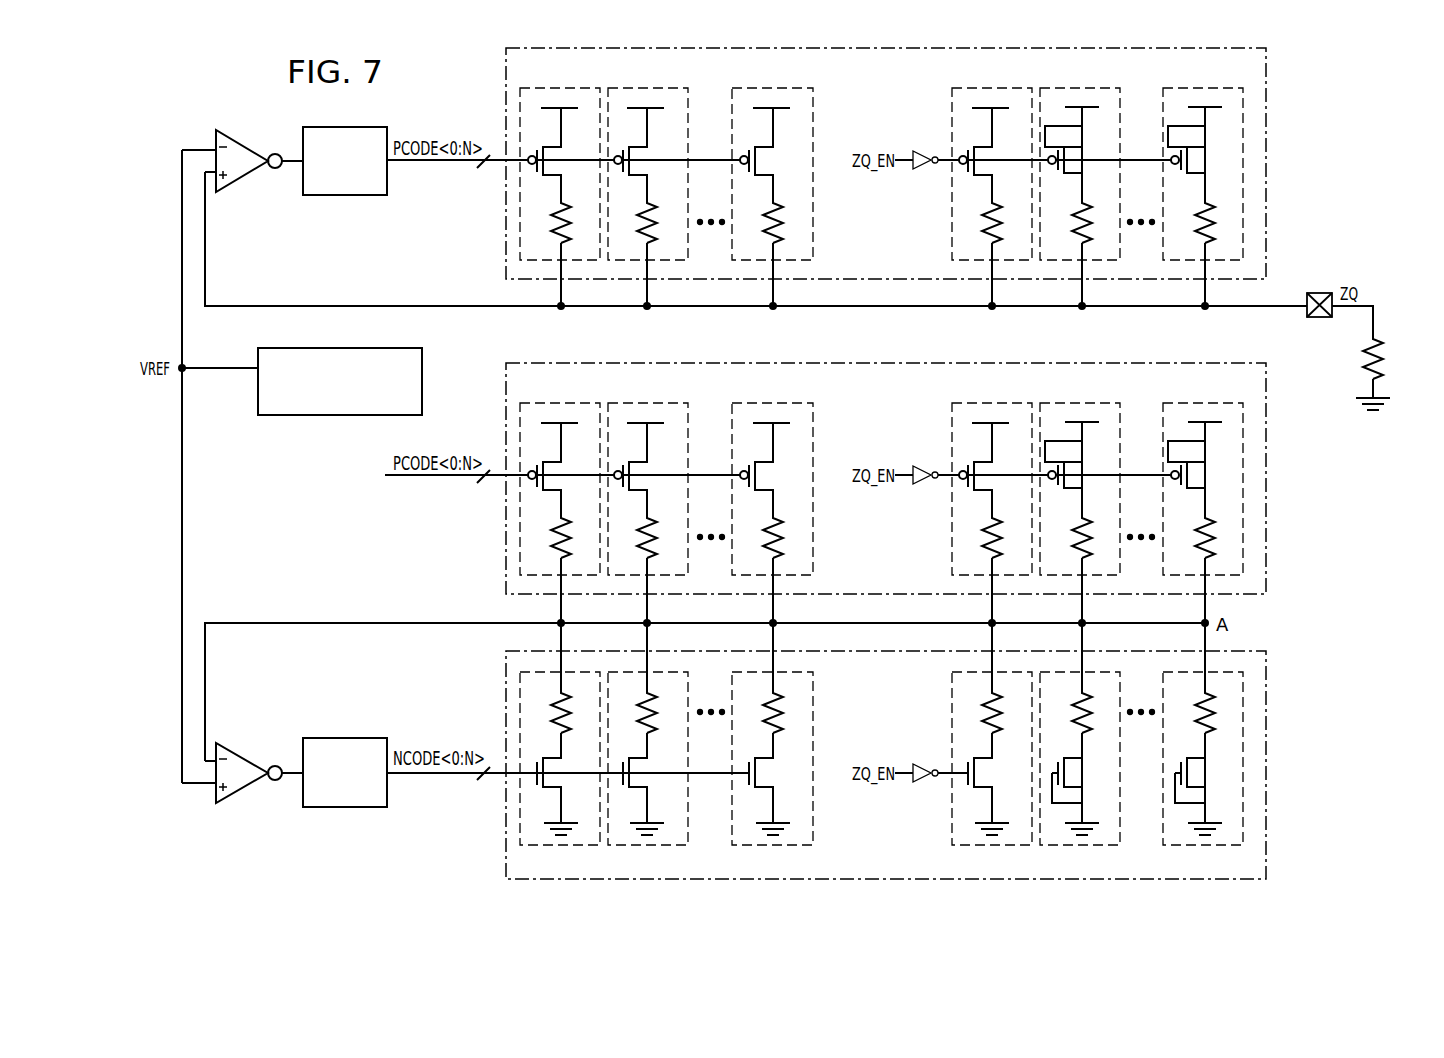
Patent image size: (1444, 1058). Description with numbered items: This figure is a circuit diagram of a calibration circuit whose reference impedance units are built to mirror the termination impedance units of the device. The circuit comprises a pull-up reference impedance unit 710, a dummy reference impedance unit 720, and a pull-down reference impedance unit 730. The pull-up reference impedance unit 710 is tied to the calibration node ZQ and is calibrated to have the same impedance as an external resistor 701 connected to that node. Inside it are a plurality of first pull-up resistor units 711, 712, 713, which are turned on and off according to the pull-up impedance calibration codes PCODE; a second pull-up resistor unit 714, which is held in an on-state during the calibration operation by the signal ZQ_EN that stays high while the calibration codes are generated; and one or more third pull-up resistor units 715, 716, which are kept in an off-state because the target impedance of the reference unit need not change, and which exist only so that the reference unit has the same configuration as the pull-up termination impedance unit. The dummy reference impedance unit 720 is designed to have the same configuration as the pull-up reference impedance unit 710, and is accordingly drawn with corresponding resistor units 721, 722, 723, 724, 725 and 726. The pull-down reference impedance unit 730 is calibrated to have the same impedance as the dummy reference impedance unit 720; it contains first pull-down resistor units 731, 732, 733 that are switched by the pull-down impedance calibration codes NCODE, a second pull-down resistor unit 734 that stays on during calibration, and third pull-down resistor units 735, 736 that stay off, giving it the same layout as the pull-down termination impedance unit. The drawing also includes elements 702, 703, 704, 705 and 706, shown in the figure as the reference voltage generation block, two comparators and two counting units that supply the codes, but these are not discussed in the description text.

The external resistor 701 is at (1385, 352).
The reference voltage generation unit 702 is at (388, 348).
The first comparator 703 is at (253, 146).
The second comparator 704 is at (253, 758).
The first counting unit 705 is at (350, 127).
The second counting unit 706 is at (350, 738).
The pull-up reference impedance unit 710 is at (1268, 73).
The first pull-up resistor unit 711 is at (557, 88).
The first pull-up resistor unit 712 is at (645, 88).
The first pull-up resistor unit 713 is at (769, 88).
The second pull-up resistor unit 714 is at (989, 88).
The third pull-up resistor unit 715 is at (1077, 88).
The third pull-up resistor unit 716 is at (1200, 88).
The dummy reference impedance unit 720 is at (1268, 388).
The second pull-up resistor leg 0 721 is at (557, 403).
The second pull-up resistor leg 1 722 is at (645, 403).
The second pull-up resistor leg N 723 is at (769, 403).
The second pull-up enable resistor leg 0 724 is at (989, 403).
The second pull-up enable resistor leg 1 725 is at (1077, 403).
The second pull-up enable resistor leg N 726 is at (1200, 403).
The pull-down reference impedance unit 730 is at (1268, 676).
The first pull-down resistor unit 731 is at (557, 846).
The first pull-down resistor unit 732 is at (645, 846).
The first pull-down resistor unit 733 is at (771, 846).
The second pull-down resistor unit 734 is at (990, 846).
The third pull-down resistor unit 735 is at (1078, 846).
The third pull-down resistor unit 736 is at (1201, 846).